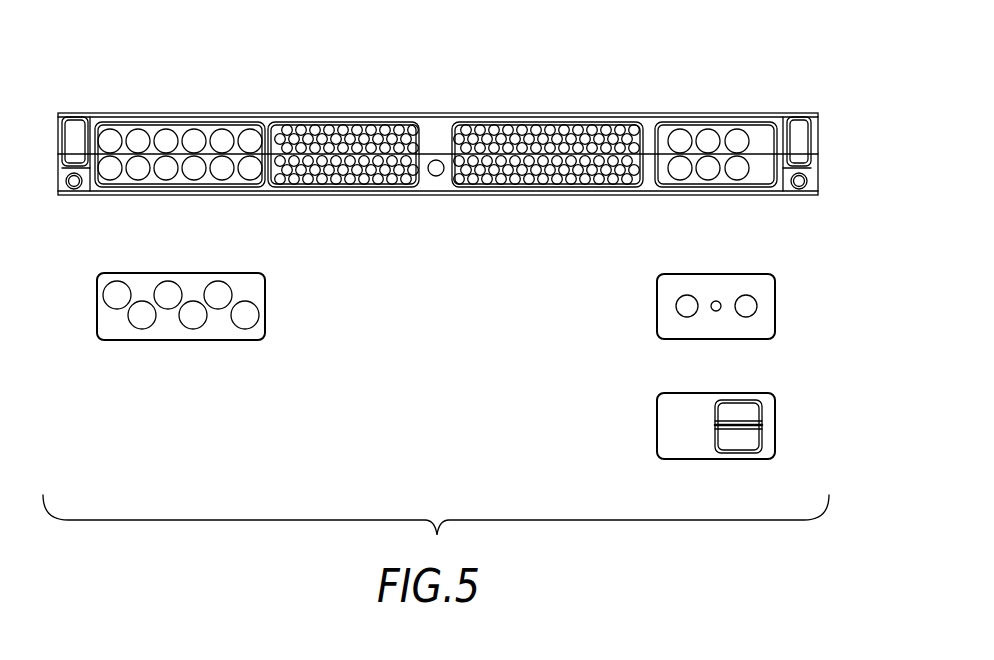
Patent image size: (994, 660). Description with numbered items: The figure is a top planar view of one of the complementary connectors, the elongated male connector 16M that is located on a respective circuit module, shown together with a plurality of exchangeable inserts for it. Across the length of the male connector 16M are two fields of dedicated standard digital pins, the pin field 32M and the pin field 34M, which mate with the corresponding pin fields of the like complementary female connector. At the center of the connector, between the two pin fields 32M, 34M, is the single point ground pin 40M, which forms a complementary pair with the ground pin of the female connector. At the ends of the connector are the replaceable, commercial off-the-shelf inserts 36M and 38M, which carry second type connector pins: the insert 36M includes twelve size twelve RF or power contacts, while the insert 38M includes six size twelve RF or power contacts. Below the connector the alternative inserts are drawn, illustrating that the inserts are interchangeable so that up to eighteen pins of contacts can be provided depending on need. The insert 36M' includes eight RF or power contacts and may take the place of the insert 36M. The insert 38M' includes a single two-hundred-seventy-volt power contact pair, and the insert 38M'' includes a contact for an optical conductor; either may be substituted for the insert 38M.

The complementary male connector 16M is at (440, 299).
The insert 36M is at (180, 178).
The pin field 32M is at (332, 186).
The single point ground pin 40M is at (436, 177).
The pin field 34M is at (525, 186).
The insert 38M is at (716, 178).
The insert 36M' is at (181, 327).
The insert 38M' is at (716, 327).
The insert 38M'' is at (716, 447).